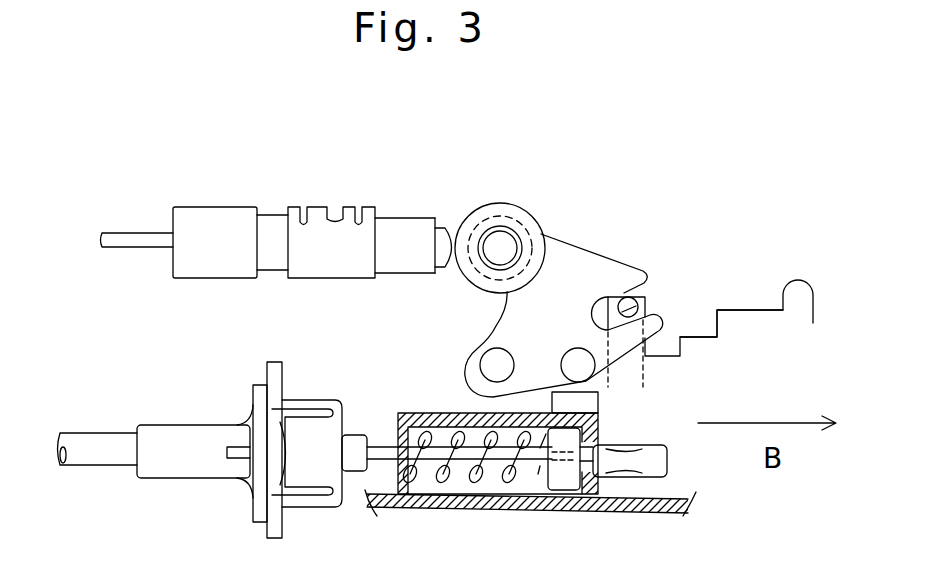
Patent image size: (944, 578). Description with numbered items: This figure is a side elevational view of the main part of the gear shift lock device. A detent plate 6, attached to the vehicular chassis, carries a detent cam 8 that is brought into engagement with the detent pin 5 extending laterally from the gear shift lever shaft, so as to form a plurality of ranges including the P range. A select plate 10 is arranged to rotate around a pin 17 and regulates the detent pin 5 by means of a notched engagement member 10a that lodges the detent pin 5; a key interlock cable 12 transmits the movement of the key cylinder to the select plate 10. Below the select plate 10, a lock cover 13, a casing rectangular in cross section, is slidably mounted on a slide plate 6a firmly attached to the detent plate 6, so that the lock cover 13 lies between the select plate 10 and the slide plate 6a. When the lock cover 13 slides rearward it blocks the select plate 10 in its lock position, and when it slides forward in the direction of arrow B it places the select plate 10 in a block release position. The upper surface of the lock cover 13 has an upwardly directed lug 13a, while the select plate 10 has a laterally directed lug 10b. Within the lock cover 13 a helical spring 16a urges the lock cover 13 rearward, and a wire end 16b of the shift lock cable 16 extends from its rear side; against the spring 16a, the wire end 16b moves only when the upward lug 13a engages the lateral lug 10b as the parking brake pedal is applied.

The key interlock cable 12 is at (130, 242).
The select plate 10 is at (574, 268).
The notched engagement member 10a is at (648, 310).
The lateral lug 10b is at (596, 370).
The detent pin 5 is at (634, 303).
The detent plate 6 is at (757, 292).
The detent cam 8 is at (735, 312).
The pin 17 is at (487, 367).
The lock cover 13 is at (425, 416).
The upward lug 13a is at (588, 404).
The shift lock cable 16 is at (381, 457).
The helical spring 16a is at (443, 476).
The wire end 16b is at (625, 478).
The slide plate 6a is at (525, 502).